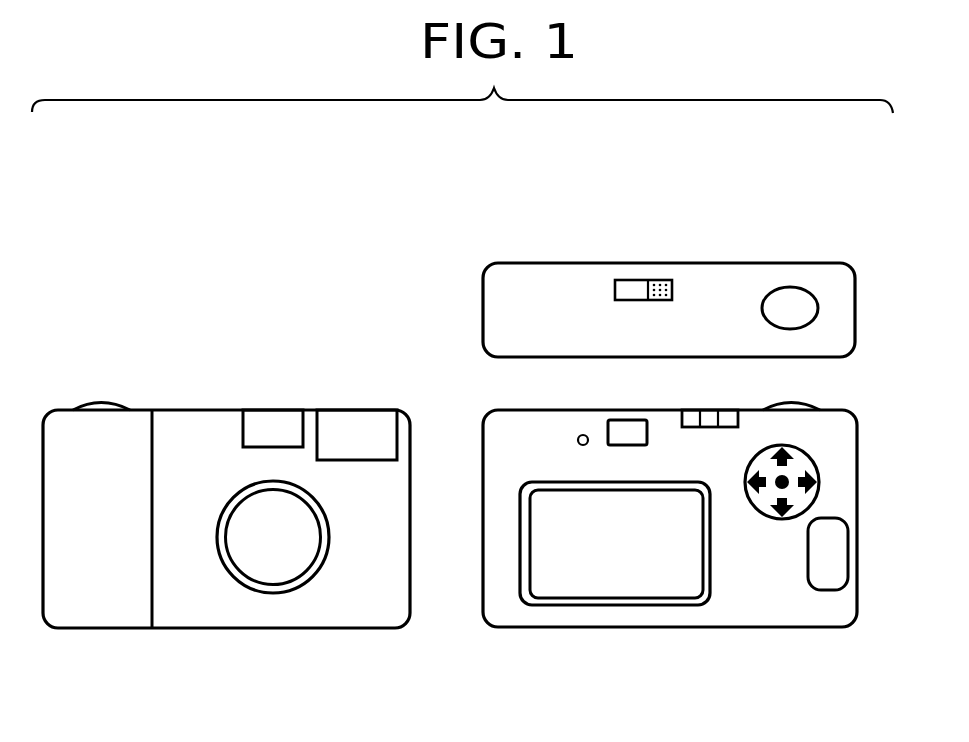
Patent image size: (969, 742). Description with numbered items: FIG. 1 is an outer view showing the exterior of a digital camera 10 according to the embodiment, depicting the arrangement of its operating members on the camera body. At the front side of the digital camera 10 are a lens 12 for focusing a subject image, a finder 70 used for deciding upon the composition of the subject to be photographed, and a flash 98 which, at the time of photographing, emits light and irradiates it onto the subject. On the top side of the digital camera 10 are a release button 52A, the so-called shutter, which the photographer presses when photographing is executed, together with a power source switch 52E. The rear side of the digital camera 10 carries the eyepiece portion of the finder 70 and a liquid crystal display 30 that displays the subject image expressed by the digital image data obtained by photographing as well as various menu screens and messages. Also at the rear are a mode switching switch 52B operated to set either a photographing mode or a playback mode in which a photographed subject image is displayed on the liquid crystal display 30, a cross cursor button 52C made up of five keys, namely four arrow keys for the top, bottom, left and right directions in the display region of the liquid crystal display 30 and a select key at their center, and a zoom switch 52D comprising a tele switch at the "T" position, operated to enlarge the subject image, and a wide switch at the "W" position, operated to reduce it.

The digital camera 10 is at (252, 277).
The lens 12 is at (312, 555).
The liquid crystal display 30 is at (617, 600).
The release button 52A is at (790, 298).
The mode switching switch 52B is at (713, 408).
The cross cursor button 52C is at (770, 518).
The zoom switch 52D is at (830, 589).
The power source switch 52E is at (633, 280).
The finder 70 is at (278, 420).
The flash 98 is at (370, 420).